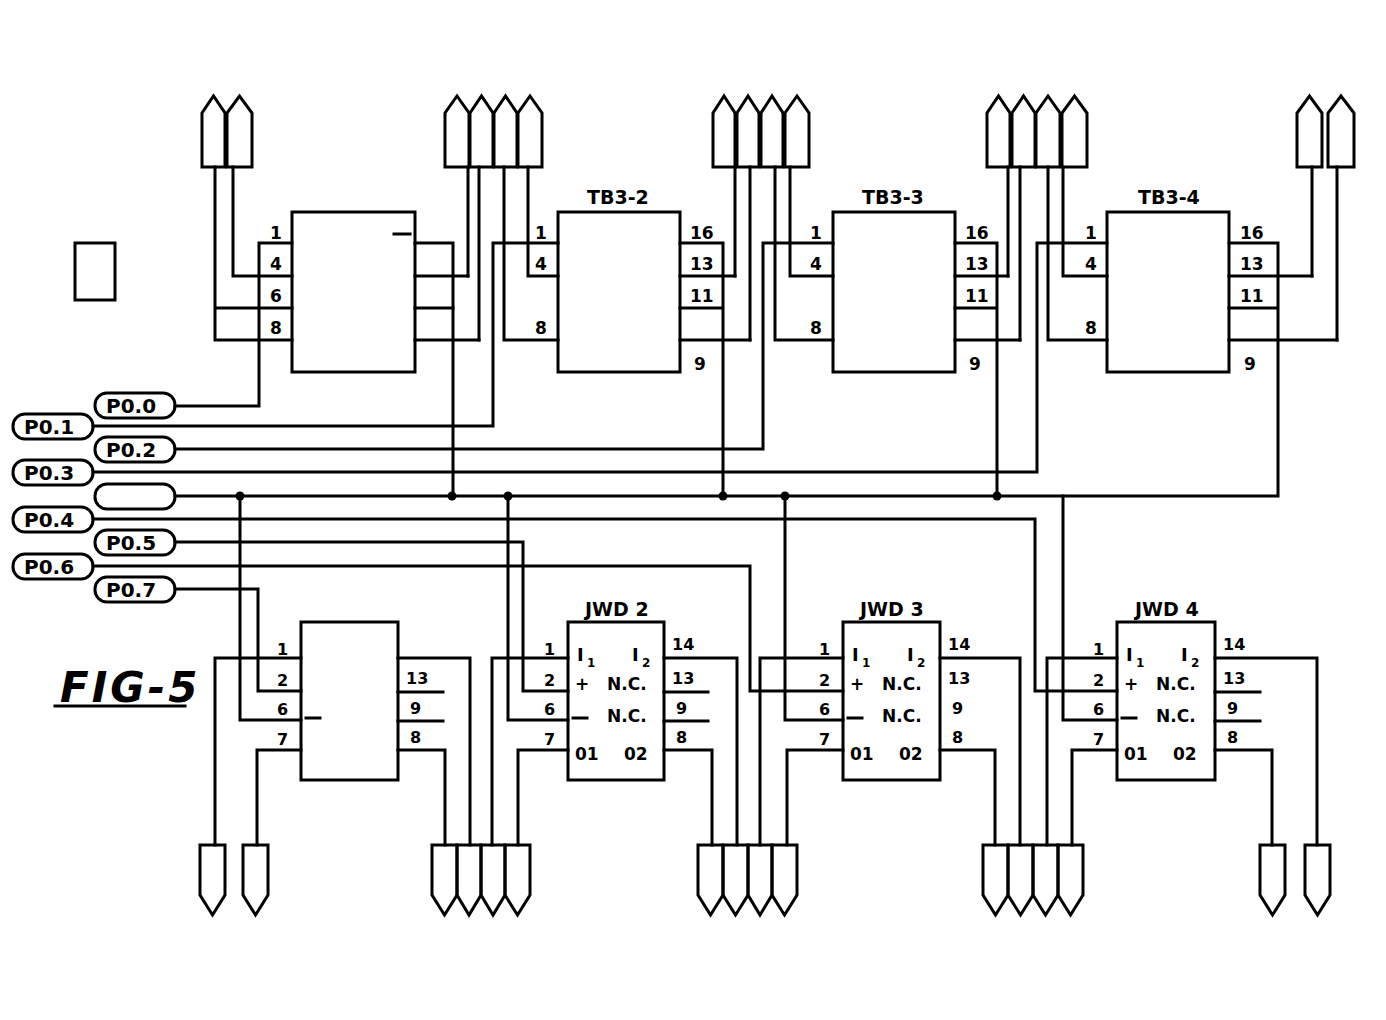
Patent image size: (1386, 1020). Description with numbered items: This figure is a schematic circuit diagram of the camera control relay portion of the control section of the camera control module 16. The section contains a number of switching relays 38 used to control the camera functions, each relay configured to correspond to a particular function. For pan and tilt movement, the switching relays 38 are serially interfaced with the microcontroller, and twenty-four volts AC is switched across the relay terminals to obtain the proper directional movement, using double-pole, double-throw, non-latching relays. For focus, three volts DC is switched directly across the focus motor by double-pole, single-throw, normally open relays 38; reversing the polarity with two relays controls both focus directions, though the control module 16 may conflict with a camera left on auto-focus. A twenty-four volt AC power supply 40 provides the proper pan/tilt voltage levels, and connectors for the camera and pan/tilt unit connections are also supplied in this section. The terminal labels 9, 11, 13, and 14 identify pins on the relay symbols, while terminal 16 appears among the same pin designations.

The switching relays 38 is at (378, 372).
The 24 VAC power supply 40 is at (117, 268).
The control module 16 is at (434, 359).
The terminal 13 is at (441, 265).
The terminal 11 is at (434, 297).
The terminal 9 is at (447, 357).
The terminal 14 is at (434, 740).